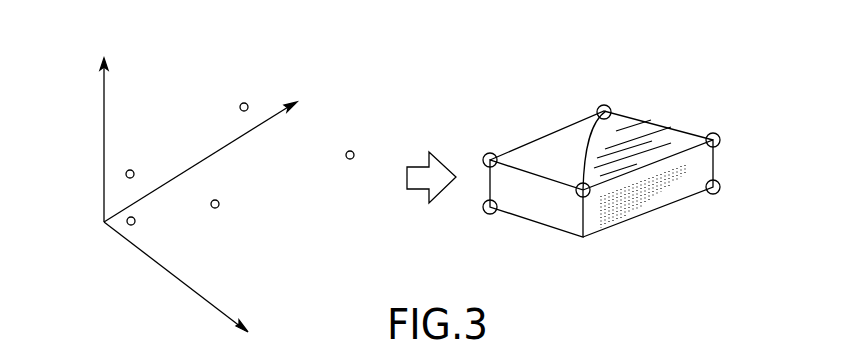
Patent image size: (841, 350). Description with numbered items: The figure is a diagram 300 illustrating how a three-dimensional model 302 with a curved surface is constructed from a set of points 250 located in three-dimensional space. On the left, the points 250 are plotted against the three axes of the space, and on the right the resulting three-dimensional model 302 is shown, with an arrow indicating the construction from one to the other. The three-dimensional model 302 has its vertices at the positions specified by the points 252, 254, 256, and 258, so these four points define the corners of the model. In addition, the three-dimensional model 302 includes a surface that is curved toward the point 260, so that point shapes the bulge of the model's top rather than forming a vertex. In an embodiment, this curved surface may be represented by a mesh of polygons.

The points in three-dimensional space 250 is at (79, 103).
The point 252 is at (130, 169).
The point 254 is at (135, 222).
The point 256 is at (219, 203).
The point 258 is at (349, 159).
The point 260 is at (244, 103).
The diagram 300 is at (746, 37).
The three-dimensional model 302 is at (728, 97).